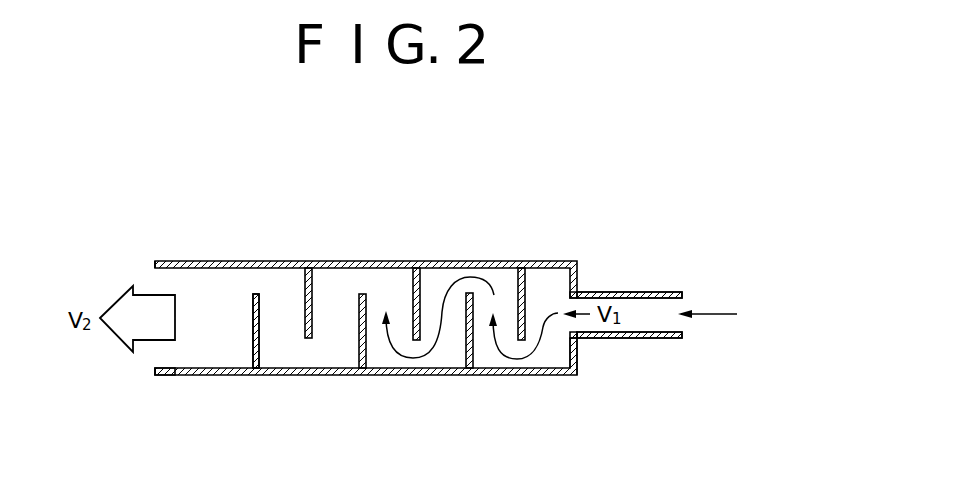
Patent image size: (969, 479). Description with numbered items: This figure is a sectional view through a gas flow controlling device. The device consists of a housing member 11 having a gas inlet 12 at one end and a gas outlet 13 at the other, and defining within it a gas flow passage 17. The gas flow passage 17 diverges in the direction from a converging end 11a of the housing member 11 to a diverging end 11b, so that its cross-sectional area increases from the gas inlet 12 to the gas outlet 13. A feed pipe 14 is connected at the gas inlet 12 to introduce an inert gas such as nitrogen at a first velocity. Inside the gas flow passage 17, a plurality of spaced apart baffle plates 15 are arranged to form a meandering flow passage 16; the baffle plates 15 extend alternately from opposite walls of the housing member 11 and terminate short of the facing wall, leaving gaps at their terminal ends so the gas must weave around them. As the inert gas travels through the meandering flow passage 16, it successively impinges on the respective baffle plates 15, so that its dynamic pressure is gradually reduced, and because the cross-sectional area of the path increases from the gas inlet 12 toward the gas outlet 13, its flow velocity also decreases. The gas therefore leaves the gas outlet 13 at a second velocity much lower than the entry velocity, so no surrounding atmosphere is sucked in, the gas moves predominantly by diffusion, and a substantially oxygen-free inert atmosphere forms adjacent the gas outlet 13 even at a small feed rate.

The housing member 11 is at (340, 260).
The converging end 11a is at (578, 355).
The diverging end 11b is at (158, 376).
The gas inlet 12 is at (578, 303).
The gas outlet 13 is at (158, 280).
The feed pipe 14 is at (665, 290).
The baffle plates 15 is at (528, 290).
The meandering flow passage 16 is at (435, 288).
The gas flow passage 17 is at (207, 307).